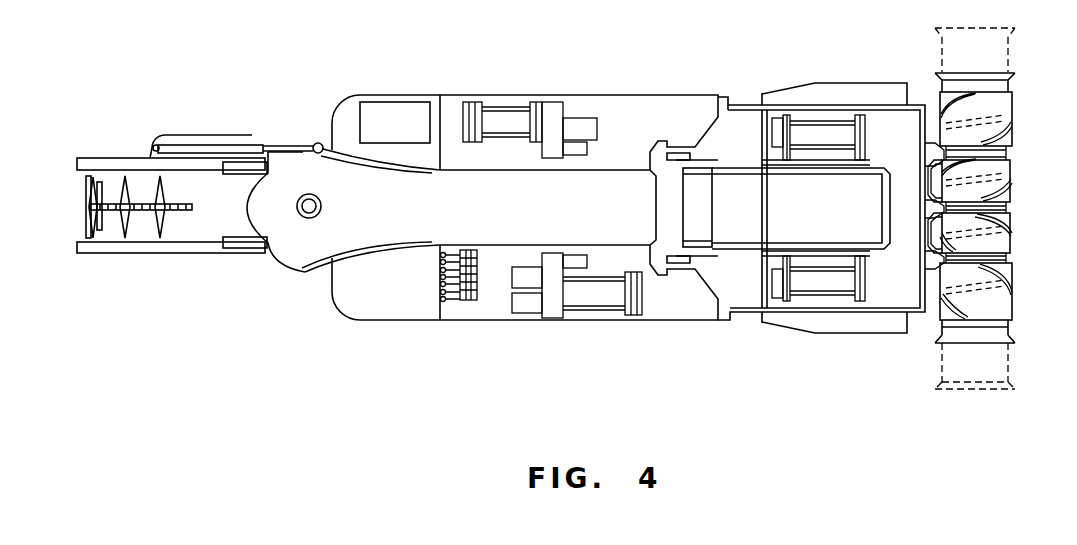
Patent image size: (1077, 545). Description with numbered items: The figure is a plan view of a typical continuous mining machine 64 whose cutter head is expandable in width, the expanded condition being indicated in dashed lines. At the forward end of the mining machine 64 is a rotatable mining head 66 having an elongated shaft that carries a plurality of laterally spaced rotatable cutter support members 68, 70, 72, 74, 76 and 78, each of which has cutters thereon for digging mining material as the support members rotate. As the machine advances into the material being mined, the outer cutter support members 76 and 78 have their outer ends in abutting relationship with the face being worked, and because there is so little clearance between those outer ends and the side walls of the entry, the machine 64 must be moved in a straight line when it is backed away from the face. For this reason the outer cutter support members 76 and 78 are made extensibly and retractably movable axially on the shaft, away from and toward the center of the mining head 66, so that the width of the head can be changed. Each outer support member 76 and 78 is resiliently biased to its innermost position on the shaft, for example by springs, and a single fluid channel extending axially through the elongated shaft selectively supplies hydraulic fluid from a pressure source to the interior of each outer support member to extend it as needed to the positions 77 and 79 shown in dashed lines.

The continuous mining machine 64 is at (678, 374).
The rotatable mining head 66 is at (976, 239).
The cutter support member 68 is at (1012, 168).
The cutter support member 70 is at (1013, 238).
The cutter support member 72 is at (1012, 104).
The cutter support member 74 is at (1013, 306).
The outer cutter support member 76 is at (938, 72).
The extended position of outer cutter support member 77 is at (1012, 52).
The outer cutter support member 78 is at (935, 344).
The extended position of outer cutter support member 79 is at (980, 392).